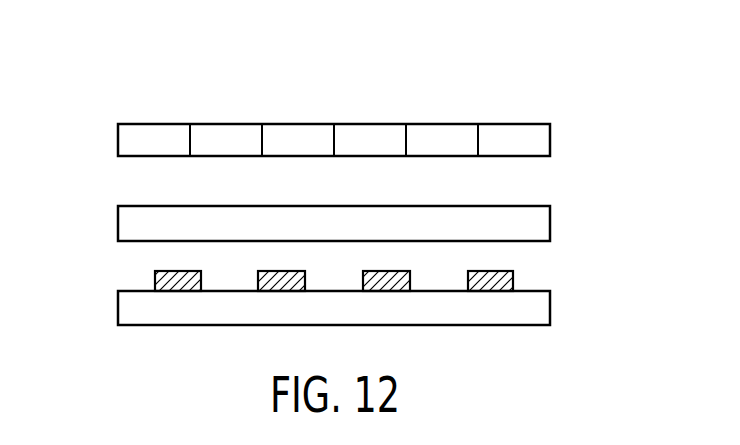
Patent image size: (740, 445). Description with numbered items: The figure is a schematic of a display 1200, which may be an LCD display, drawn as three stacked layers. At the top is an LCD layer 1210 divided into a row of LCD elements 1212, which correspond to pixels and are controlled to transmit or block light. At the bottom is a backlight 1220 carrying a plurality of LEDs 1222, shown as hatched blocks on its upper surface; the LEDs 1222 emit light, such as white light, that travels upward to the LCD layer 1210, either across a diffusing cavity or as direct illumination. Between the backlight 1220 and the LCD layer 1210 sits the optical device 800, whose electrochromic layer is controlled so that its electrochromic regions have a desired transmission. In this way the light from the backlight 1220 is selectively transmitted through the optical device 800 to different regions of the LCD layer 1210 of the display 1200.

The display 1200 is at (469, 80).
The LCD layer 1210 is at (341, 141).
The LCD elements 1212 is at (122, 142).
The optical device 800 is at (550, 222).
The backlight 1220 is at (348, 287).
The LEDs 1222 is at (153, 275).